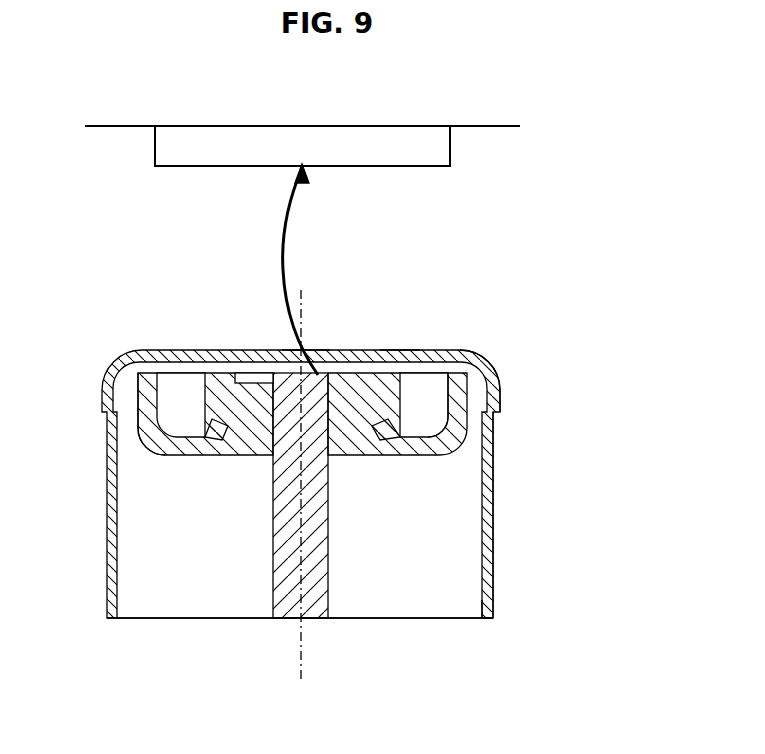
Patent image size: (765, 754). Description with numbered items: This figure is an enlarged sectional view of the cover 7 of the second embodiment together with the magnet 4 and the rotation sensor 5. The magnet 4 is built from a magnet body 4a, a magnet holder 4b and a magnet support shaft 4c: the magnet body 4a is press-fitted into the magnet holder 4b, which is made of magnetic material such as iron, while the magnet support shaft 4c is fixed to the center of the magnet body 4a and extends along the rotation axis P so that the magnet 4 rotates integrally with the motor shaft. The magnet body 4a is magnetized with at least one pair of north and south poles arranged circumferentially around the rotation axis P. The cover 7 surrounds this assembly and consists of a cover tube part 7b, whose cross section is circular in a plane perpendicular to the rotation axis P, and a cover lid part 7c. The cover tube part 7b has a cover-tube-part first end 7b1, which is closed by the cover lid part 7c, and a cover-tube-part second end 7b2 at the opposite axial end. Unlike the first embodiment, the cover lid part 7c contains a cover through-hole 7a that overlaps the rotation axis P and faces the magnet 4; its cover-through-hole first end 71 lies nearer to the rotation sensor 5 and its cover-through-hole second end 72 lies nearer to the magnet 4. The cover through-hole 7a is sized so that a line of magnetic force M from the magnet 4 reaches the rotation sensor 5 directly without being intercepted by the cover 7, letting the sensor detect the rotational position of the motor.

The rotation sensor 5 is at (365, 137).
The line of magnetic force M is at (293, 210).
The cover 7 is at (198, 348).
The cover through-hole 7a is at (310, 352).
The cover tube part 7b is at (494, 505).
The cover-tube-part first end 7b1 is at (502, 388).
The cover-tube-part second end 7b2 is at (494, 610).
The cover lid part 7c is at (402, 350).
The cover-through-hole first end 71 is at (289, 345).
The cover-through-hole second end 72 is at (266, 388).
The magnet 4 is at (234, 462).
The magnet body 4a is at (423, 400).
The magnet holder 4b is at (130, 385).
The magnet support shaft 4c is at (285, 608).
The rotation axis P is at (298, 496).